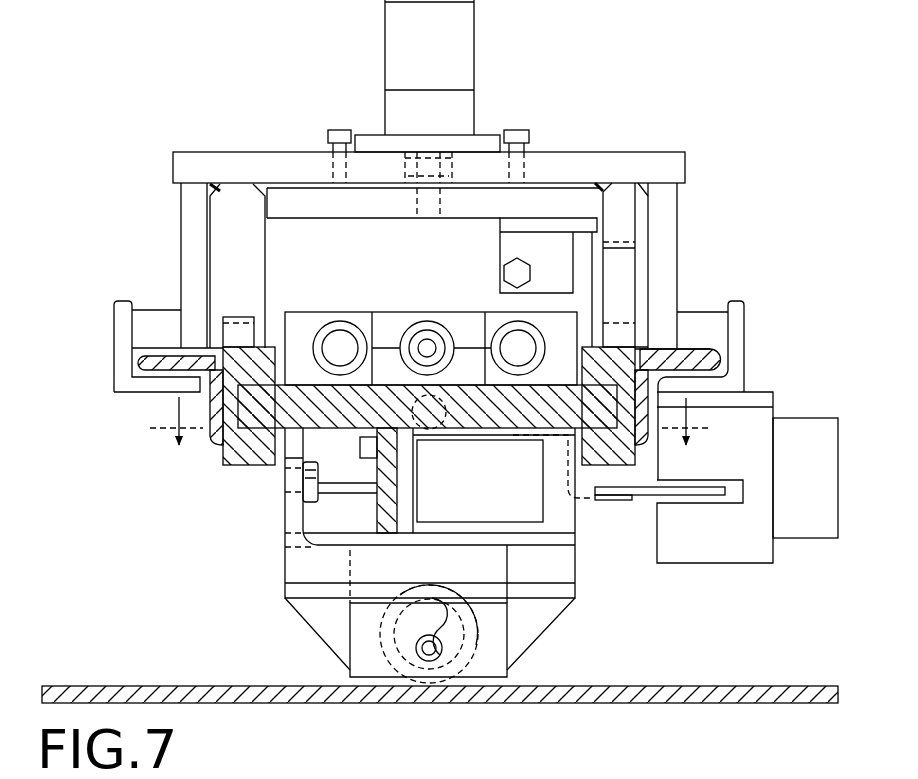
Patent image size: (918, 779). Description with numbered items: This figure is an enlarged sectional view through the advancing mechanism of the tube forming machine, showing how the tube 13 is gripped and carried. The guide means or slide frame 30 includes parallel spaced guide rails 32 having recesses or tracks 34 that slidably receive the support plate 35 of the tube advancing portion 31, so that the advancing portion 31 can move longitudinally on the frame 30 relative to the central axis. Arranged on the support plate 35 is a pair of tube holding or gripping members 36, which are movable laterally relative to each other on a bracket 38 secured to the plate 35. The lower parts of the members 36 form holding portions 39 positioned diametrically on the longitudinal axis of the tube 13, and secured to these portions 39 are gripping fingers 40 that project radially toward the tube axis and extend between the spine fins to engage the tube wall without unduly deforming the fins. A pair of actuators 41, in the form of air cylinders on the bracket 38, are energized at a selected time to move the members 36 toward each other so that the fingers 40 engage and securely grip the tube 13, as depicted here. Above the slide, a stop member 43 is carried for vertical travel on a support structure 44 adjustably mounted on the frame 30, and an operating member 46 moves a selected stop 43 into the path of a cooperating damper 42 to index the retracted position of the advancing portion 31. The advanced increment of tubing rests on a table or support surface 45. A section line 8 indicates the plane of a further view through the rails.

The section line 8- 8 is at (430, 421).
The tube 13 is at (430, 662).
The slide frame 30 is at (222, 118).
The tube advancing portion 31 is at (220, 547).
The guide rails 32 is at (247, 467).
The tracks 34 is at (245, 412).
The support plate 35 is at (357, 415).
The gripping members 36 is at (300, 572).
The bracket 38 is at (380, 505).
The holding portions 39 is at (497, 652).
The gripping fingers 40 is at (460, 616).
The actuators 41 is at (496, 494).
The damper 42 is at (340, 332).
The stop members 43 is at (510, 270).
The support structure 44 is at (181, 243).
The support surface 45 is at (632, 687).
The operating member 46 is at (473, 53).